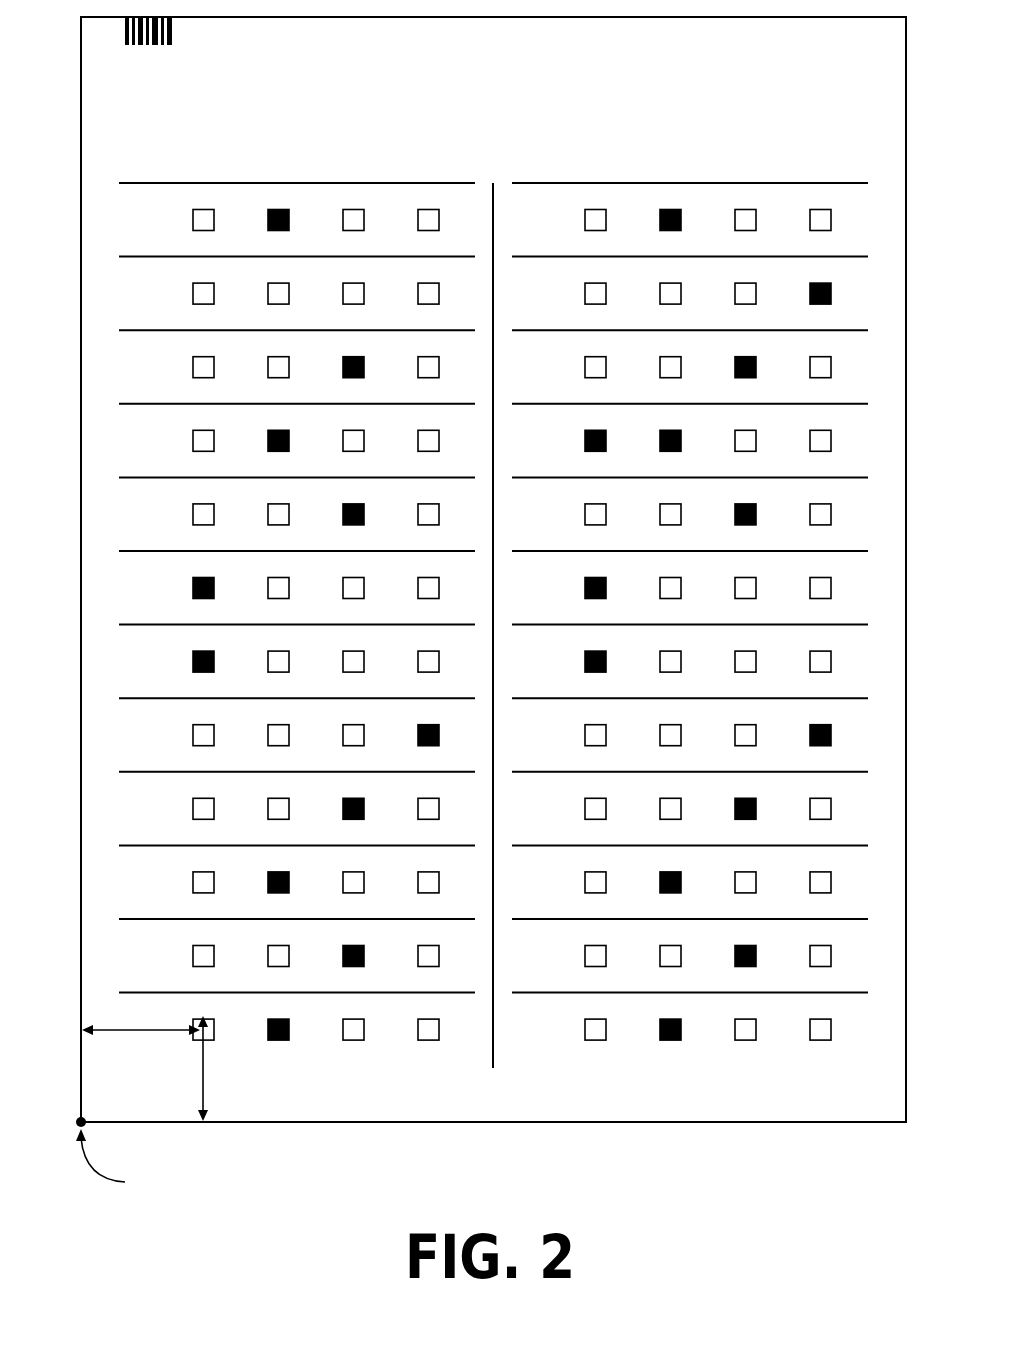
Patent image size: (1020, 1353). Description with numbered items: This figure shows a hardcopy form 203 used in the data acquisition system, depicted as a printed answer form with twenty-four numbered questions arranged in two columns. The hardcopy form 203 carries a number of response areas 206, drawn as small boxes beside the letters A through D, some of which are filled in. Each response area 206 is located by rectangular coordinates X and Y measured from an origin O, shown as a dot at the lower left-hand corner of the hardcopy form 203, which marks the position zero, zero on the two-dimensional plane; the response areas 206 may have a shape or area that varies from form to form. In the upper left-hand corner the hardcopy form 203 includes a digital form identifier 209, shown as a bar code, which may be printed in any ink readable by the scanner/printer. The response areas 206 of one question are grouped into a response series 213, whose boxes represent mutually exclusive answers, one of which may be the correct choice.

The hardcopy form 203 is at (468, 609).
The response area 206 is at (203, 202).
The digital form identifier 209 is at (186, 33).
The response series 213 is at (114, 511).